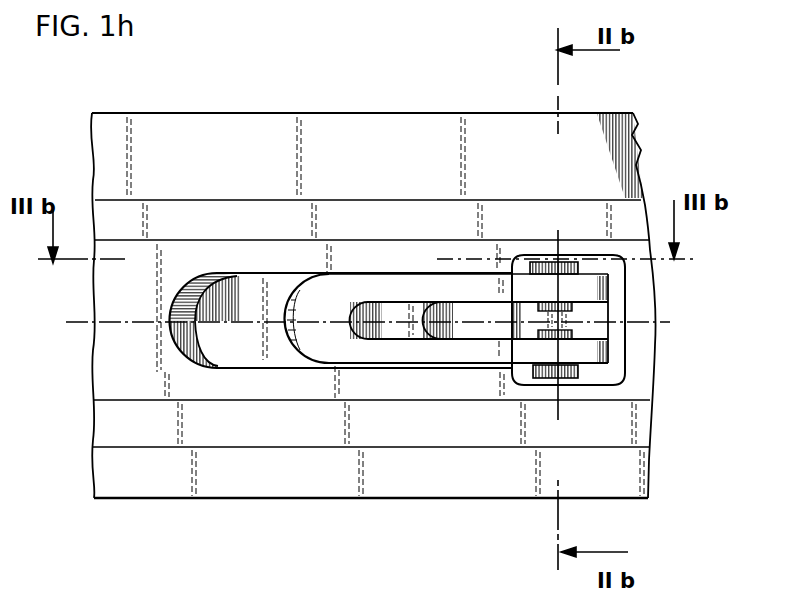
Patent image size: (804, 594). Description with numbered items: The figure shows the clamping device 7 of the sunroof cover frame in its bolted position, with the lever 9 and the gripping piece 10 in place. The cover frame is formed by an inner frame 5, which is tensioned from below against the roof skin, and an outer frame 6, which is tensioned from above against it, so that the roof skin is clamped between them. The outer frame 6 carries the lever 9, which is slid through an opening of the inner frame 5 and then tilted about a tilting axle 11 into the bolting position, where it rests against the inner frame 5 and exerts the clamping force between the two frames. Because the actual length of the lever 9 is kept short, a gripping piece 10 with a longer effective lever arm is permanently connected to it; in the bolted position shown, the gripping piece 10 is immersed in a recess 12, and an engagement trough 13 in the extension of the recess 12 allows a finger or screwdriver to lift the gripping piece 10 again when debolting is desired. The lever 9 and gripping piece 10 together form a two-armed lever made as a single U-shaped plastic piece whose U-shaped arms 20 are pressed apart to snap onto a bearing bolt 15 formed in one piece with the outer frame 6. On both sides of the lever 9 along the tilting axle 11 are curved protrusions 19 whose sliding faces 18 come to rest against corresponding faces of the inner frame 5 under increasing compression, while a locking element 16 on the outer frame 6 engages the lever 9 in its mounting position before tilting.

The inner frame 5 is at (157, 378).
The outer frame 6 is at (320, 125).
The clamping device 7 is at (454, 262).
The lever 9 is at (565, 398).
The gripping piece 10 is at (353, 350).
The tilting axle 11 is at (557, 230).
The recess 12 is at (286, 354).
The engagement trough 13 is at (218, 340).
The bearing bolt 15 is at (535, 327).
The locking element 16 is at (607, 349).
The sliding face 18 is at (604, 371).
The protrusion 19 is at (572, 373).
The U-shaped arm 20 is at (480, 344).